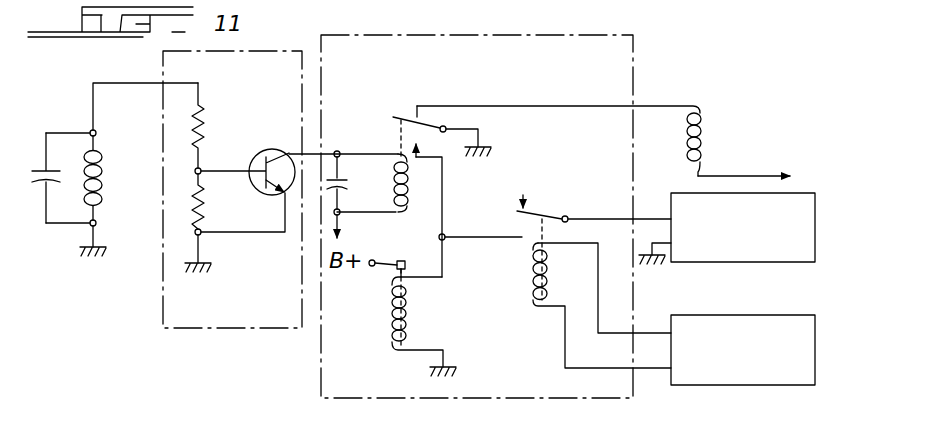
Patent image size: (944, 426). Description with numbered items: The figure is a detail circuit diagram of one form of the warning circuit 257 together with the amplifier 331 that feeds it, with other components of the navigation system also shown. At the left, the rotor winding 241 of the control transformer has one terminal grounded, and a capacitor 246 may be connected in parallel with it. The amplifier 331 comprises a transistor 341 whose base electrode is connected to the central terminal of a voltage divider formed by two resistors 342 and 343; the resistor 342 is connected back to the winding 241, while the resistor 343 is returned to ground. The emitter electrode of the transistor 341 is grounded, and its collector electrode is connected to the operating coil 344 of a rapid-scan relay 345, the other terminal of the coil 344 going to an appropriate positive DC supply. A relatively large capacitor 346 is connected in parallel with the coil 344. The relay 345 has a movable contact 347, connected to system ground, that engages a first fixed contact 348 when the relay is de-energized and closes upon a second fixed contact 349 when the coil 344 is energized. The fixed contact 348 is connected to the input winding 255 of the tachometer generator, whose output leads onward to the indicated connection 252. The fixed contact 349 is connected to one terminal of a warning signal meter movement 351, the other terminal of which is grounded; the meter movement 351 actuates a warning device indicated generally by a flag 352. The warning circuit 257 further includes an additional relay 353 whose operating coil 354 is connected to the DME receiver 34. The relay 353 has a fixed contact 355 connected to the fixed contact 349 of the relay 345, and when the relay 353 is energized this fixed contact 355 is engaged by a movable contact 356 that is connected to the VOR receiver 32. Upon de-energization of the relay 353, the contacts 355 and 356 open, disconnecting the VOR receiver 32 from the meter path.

The capacitor 246 is at (33, 178).
The rotor winding 241 is at (101, 160).
The amplifier 331 is at (203, 329).
The resistor 342 is at (203, 118).
The resistor 343 is at (202, 200).
The transistor 341 is at (282, 151).
The warning circuit 257 is at (320, 360).
The capacitor 346 is at (341, 185).
The operating coil 344 is at (396, 180).
The rapid-scan relay 345 is at (387, 140).
The first fixed contact 348 is at (417, 109).
The movable contact 347 is at (428, 121).
The second fixed contact 349 is at (421, 157).
The flag 352 is at (388, 262).
The warning signal meter movement 351 is at (394, 326).
The fixed contact 355 is at (521, 234).
The movable contact 356 is at (533, 212).
The additional relay 353 is at (527, 245).
The operating coil 354 is at (532, 273).
The input winding 255 is at (704, 149).
The connection to 252 is at (768, 171).
The VOR receiver 32 is at (785, 263).
The DME receiver 34 is at (773, 316).